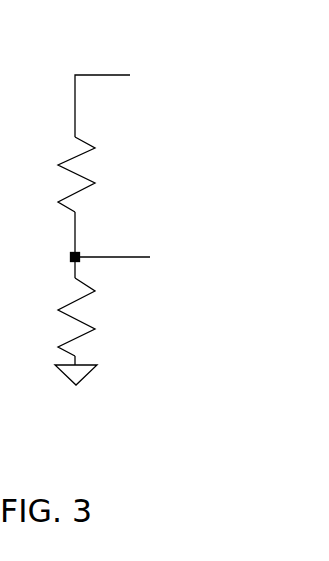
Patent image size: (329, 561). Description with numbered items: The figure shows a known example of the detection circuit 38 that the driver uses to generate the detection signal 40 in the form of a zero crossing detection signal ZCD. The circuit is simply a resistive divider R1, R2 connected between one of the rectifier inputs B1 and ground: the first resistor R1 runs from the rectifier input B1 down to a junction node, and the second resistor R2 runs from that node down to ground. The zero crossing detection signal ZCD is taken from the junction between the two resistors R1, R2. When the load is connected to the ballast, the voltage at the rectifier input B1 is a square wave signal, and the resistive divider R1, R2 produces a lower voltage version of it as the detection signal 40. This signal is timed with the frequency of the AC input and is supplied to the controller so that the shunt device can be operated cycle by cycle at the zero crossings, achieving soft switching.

The detector 38 is at (142, 148).
The detection signal 40 is at (128, 260).
The rectifier input B1 is at (102, 94).
The first resistor of the resistive divider R1 is at (94, 174).
The second resistor of the resistive divider R2 is at (94, 317).
The zero crossing detection signal ZCD is at (114, 243).